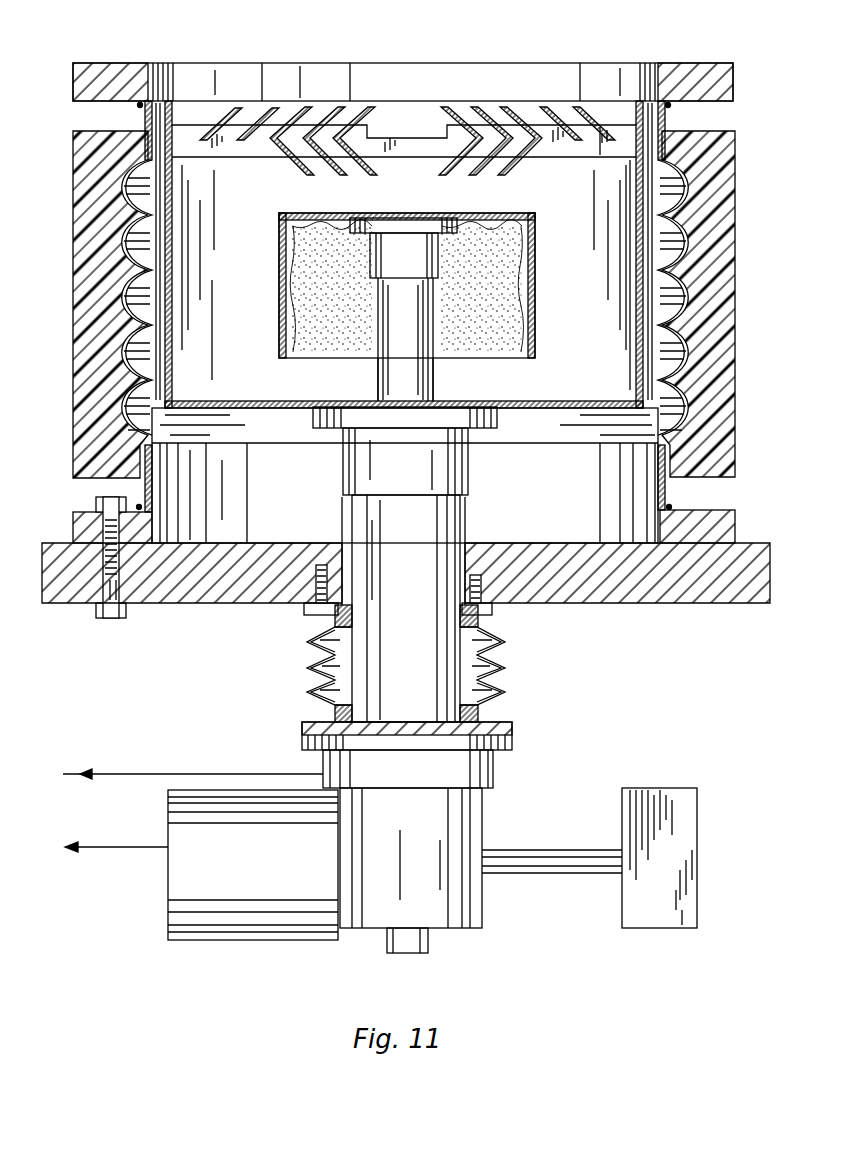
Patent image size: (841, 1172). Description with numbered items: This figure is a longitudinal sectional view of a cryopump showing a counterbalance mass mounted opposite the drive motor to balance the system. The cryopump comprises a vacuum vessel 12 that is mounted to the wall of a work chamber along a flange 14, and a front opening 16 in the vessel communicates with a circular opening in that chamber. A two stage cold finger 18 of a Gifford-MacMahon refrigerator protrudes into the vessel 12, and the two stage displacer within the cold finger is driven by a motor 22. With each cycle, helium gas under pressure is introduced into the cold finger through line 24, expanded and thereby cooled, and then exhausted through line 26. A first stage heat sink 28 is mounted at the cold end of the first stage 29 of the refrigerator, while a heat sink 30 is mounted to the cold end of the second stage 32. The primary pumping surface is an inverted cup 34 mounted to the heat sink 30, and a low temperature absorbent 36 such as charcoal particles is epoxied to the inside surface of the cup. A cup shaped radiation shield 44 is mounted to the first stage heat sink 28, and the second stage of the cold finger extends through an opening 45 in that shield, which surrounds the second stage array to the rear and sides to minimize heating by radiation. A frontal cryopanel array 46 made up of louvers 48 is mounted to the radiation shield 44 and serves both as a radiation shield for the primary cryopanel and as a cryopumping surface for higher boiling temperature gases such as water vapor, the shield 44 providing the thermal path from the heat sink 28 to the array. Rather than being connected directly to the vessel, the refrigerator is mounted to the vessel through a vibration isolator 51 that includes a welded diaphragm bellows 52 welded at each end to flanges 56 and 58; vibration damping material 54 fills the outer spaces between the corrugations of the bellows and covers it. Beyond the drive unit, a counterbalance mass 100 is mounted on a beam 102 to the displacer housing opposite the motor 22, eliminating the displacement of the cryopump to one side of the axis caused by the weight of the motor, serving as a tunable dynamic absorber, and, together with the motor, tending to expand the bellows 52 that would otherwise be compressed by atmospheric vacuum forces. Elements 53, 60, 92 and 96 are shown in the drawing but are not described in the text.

The vacuum vessel 12 is at (640, 340).
The flange 14 is at (73, 104).
The front opening 16 is at (524, 62).
The two stage cold finger 18 is at (470, 467).
The motor 22 is at (251, 940).
The line 24 is at (120, 772).
The line 26 is at (113, 848).
The first stage heat sink 28 is at (318, 418).
The first stage 29 is at (420, 594).
The heat sink 30 is at (374, 228).
The second stage 32 is at (396, 318).
The inverted cup 34 is at (534, 292).
The low temperature absorbent 36 is at (521, 335).
The radiation shield 44 is at (172, 296).
The opening 45 is at (382, 394).
The frontal cryopanel array 46 is at (316, 99).
The louvers 48 is at (364, 104).
The vibration isolator 51 is at (566, 667).
The bellows 52 is at (492, 666).
The lower flange 53 is at (737, 518).
The vibration damping material 54 is at (735, 298).
The flange 56 is at (305, 610).
The flange 58 is at (507, 726).
The seal plate 60 is at (612, 147).
The base plate 92 is at (618, 604).
The top plate end 96 is at (672, 66).
The counterbalance mass 100 is at (655, 790).
The beam 102 is at (540, 850).